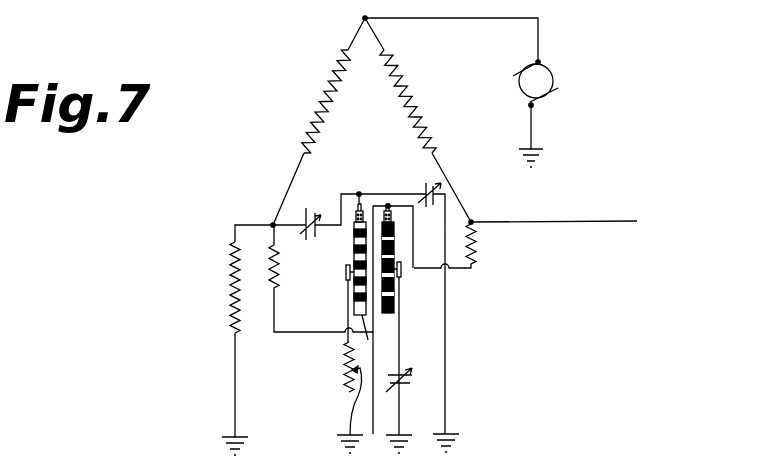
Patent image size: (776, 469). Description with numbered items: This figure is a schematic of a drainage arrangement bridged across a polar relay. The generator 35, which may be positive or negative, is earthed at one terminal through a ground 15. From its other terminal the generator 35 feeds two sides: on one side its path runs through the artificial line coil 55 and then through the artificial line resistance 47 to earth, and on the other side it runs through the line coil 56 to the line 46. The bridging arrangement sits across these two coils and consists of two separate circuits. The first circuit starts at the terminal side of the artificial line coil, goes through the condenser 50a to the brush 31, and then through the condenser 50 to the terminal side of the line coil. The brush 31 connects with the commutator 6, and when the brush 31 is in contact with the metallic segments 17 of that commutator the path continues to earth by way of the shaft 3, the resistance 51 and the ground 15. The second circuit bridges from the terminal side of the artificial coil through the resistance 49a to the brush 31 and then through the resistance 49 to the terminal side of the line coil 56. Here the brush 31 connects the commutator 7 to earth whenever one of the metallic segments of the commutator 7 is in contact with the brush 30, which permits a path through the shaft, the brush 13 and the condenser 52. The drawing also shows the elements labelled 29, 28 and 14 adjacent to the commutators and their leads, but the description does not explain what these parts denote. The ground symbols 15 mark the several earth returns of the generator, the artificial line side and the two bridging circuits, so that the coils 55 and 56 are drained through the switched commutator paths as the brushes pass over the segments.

The artificial line coil 55 is at (323, 97).
The line coil 56 is at (412, 101).
The generator 35 is at (553, 73).
The ground 15 is at (540, 153).
The line 46 is at (554, 211).
The resistance 49 is at (478, 256).
The resistance 49a is at (276, 289).
The condenser 50 is at (424, 190).
The condenser 50a is at (305, 213).
The artificial line resistance 47 is at (233, 312).
The resistance 51 is at (347, 375).
The condenser 52 is at (406, 385).
The commutator 6 is at (354, 247).
The commutator 7 is at (394, 243).
The terminal 29 is at (355, 217).
The brush 31 is at (361, 195).
The brush 30 is at (392, 212).
The terminal 28 is at (394, 228).
The shaft 3 is at (345, 270).
The lead 14 is at (346, 281).
The brush 13 is at (400, 283).
The metallic segments 17 is at (376, 337).